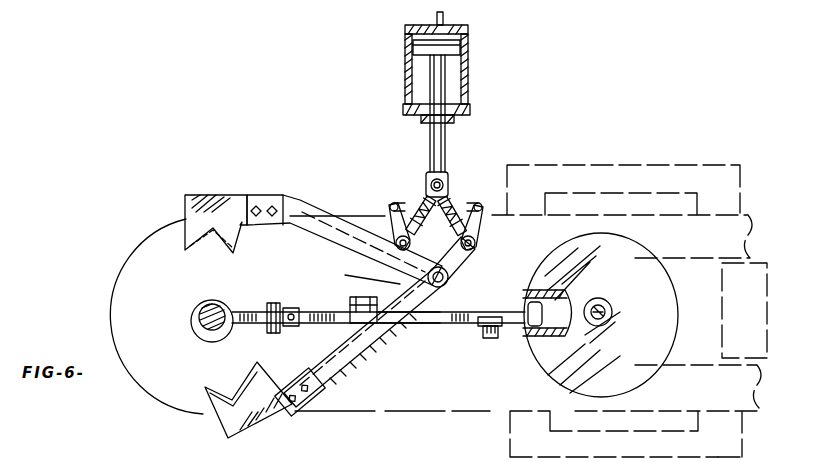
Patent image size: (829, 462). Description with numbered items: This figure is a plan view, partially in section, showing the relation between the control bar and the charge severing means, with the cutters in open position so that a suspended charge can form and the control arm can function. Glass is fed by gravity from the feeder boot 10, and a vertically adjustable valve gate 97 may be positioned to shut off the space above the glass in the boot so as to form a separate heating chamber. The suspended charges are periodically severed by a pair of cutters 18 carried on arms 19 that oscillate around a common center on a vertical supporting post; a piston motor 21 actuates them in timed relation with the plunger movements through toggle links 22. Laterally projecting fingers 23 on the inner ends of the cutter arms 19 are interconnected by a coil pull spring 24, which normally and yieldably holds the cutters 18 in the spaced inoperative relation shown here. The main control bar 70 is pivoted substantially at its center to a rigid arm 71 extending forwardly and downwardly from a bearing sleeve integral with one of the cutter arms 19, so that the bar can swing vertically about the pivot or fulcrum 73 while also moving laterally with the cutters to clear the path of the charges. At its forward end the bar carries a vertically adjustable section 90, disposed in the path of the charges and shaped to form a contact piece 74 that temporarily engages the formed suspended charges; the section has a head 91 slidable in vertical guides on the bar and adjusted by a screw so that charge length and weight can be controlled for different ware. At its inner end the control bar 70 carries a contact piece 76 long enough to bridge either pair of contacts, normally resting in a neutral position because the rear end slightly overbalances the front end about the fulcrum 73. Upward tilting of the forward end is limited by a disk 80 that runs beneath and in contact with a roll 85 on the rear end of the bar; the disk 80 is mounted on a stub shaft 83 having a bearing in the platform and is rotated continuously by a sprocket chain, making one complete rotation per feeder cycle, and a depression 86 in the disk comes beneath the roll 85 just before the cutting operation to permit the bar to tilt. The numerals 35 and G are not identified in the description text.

The feeder boot 10 is at (395, 413).
The cutters 18 is at (186, 240).
The arms 19 is at (332, 230).
The piston motor 21 is at (468, 68).
The toggle links 22 is at (462, 206).
The fingers 23 is at (393, 232).
The coil pull spring 24 is at (416, 204).
The frame bar 35 is at (562, 430).
The main control bar 70 is at (340, 308).
The rigid arm 71 is at (392, 283).
The pivot or fulcrum 73 is at (352, 324).
The contact piece 74 is at (200, 330).
The contact piece 76 is at (481, 324).
The disk 80 is at (542, 270).
The stub shaft 83 is at (606, 312).
The roll 85 is at (530, 305).
The depression 86 is at (530, 293).
The vertically adjustable section 90 is at (256, 325).
The head 91 is at (268, 304).
The valve gate 97 is at (722, 320).
The gauge wheel G is at (206, 308).